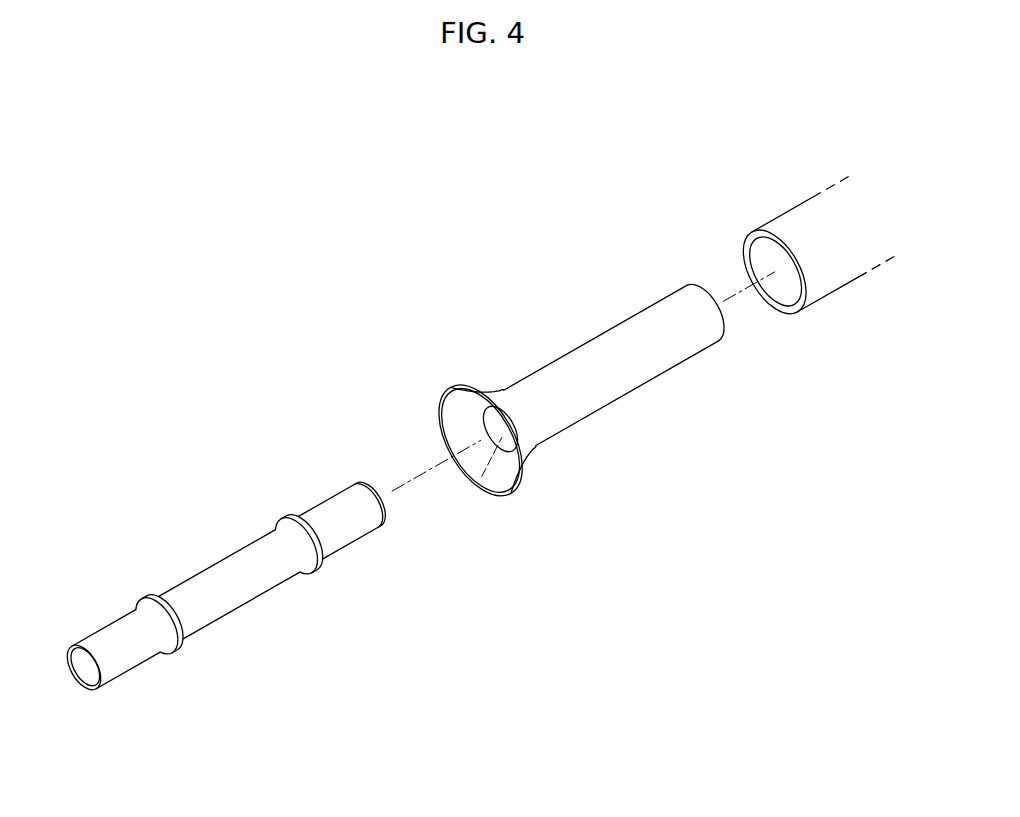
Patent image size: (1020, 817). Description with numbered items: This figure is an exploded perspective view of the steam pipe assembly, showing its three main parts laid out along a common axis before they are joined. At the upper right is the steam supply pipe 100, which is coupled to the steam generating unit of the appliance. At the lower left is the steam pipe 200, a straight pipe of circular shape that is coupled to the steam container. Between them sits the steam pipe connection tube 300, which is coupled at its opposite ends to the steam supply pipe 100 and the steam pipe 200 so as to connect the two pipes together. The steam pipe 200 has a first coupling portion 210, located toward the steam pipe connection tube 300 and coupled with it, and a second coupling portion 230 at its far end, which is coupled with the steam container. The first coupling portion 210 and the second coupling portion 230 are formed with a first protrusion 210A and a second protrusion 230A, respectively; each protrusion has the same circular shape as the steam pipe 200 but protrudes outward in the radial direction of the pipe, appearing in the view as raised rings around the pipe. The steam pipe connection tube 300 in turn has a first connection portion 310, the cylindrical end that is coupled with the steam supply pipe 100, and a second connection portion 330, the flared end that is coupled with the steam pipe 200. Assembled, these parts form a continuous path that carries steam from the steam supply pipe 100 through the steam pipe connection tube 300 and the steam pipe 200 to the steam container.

The steam supply pipe 100 is at (779, 193).
The steam pipe 200 is at (205, 525).
The first coupling portion 210 is at (355, 526).
The first protrusion 210A is at (318, 572).
The second coupling portion 230 is at (117, 673).
The second protrusion 230A is at (181, 653).
The steam pipe connection tube 300 is at (558, 320).
The first connection portion 310 is at (665, 362).
The second connection portion 330 is at (522, 455).